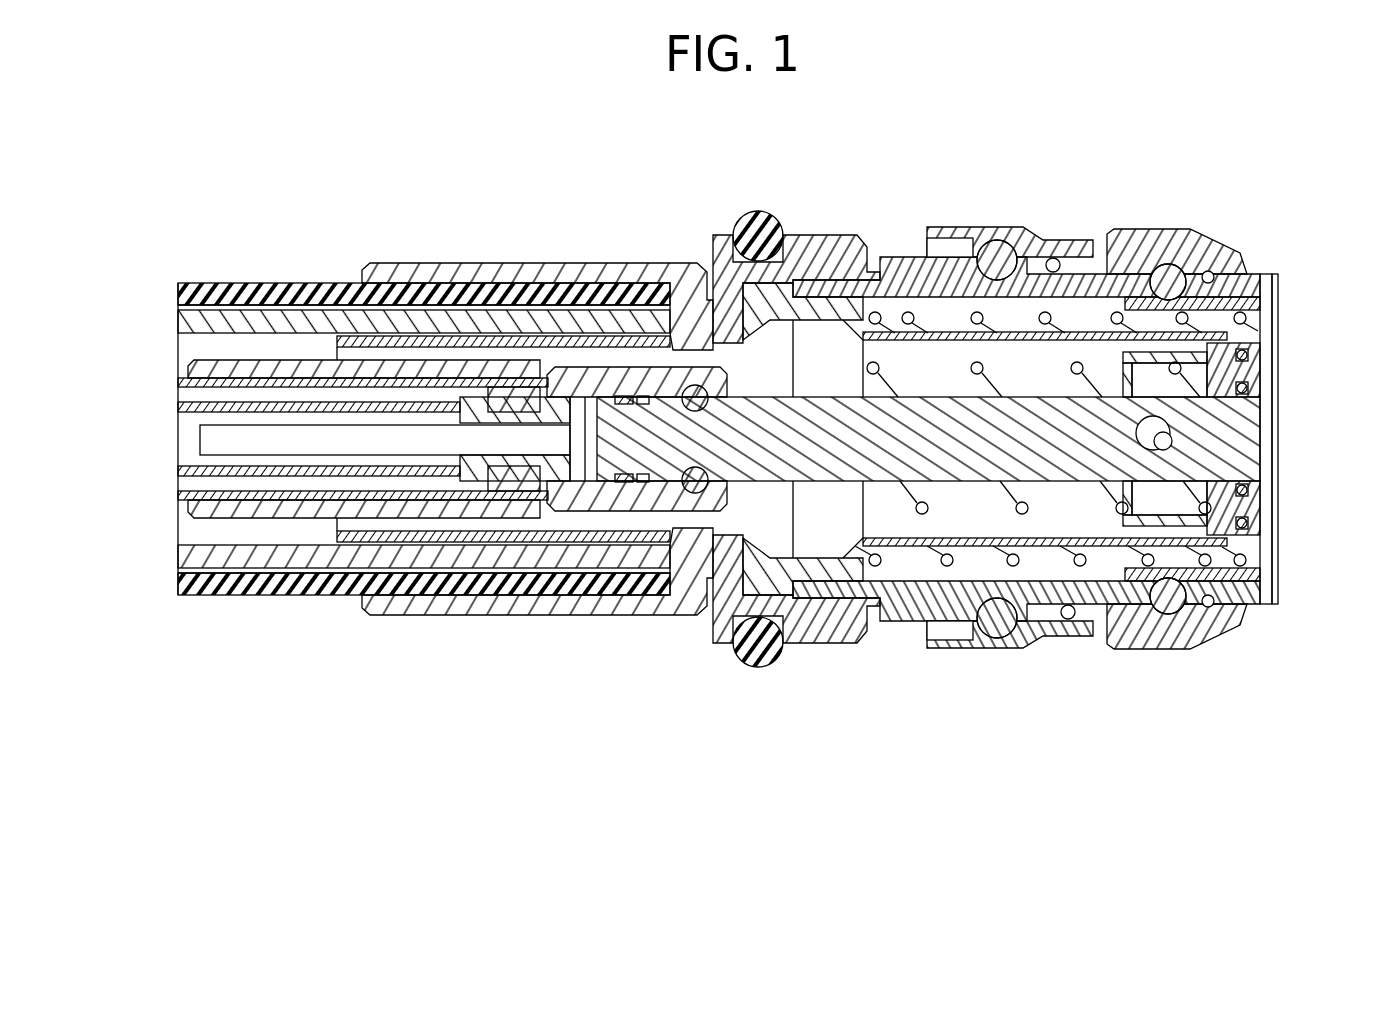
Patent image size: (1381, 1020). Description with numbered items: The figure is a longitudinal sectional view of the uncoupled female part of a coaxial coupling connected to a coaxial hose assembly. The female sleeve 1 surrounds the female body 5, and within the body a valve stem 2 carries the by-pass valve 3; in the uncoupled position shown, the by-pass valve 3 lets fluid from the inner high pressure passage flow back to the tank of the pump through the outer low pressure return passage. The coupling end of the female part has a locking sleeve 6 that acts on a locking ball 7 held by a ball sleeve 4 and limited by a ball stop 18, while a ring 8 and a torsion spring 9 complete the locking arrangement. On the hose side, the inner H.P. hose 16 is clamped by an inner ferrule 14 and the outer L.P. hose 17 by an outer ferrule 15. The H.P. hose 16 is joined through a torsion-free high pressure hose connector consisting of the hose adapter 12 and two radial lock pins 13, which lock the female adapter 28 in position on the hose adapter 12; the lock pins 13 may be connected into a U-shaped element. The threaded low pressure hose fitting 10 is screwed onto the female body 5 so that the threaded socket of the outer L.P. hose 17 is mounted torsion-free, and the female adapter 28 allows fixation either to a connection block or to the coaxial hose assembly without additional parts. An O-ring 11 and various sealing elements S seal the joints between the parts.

The female sleeve 1 is at (1253, 335).
The valve stem 2 is at (1247, 447).
The by-pass valve 3 is at (1245, 502).
The ball sleeve 4 is at (1262, 555).
The female body 5 is at (1272, 598).
The locking sleeve 6 is at (1232, 617).
The locking ball 7 is at (1172, 605).
The ring 8 is at (1132, 612).
The torsion spring 9 is at (1068, 622).
The hose fitting 10 is at (828, 628).
The O-ring 11 is at (760, 667).
The hose adapter 12 is at (717, 497).
The lock pin 13 is at (690, 483).
The inner ferrule 14 is at (522, 510).
The outer ferrule 15 is at (432, 603).
The H.P. hose 16 is at (308, 482).
The L.P. hose 17 is at (253, 587).
The ball stop 18 is at (992, 243).
The female adapter 28 is at (607, 470).
The sealing elements S is at (1253, 402).